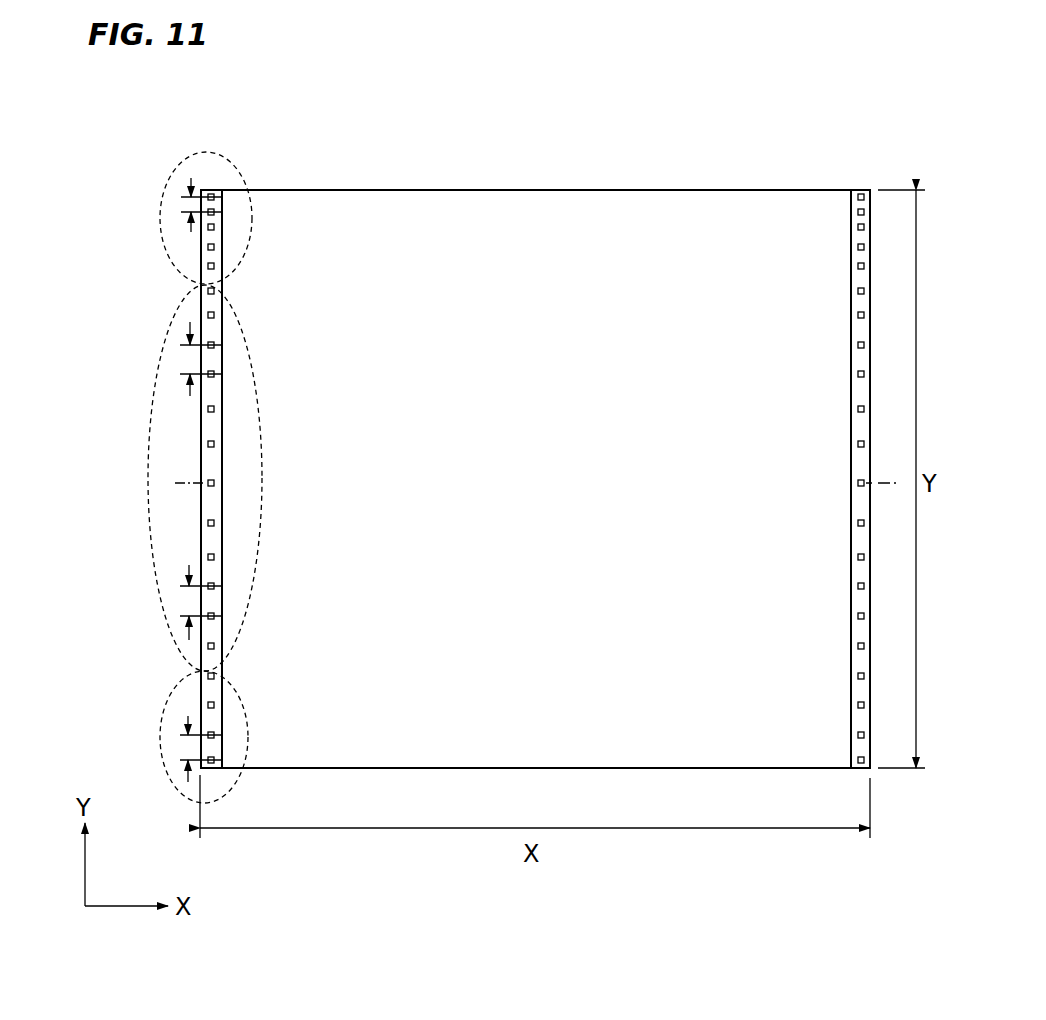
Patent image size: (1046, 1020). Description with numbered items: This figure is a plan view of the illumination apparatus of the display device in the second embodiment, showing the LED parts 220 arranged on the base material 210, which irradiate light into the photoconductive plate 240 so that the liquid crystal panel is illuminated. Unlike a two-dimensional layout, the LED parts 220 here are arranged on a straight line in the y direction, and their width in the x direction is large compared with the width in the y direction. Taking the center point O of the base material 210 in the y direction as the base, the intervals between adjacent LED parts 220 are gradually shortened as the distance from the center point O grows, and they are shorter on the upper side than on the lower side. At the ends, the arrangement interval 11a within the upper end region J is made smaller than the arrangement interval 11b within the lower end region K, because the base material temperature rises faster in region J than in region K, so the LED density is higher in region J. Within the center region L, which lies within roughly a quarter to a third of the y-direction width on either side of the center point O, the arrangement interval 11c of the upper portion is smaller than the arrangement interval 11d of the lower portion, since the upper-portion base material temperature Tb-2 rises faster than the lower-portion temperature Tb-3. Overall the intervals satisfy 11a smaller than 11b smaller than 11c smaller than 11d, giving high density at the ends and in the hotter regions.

The photoconductive plate 240 is at (600, 213).
The LED parts 220 is at (862, 190).
The base material 210 is at (862, 330).
The arrangement interval 11a is at (190, 205).
The arrangement interval 11b is at (188, 748).
The arrangement interval 11c is at (190, 360).
The arrangement interval 11d is at (190, 600).
The base material temperature Tb-2 is at (213, 357).
The base material temperature Tb-3 is at (213, 600).
The region J is at (206, 152).
The region K is at (248, 715).
The center region L is at (262, 434).
The center point O is at (210, 482).